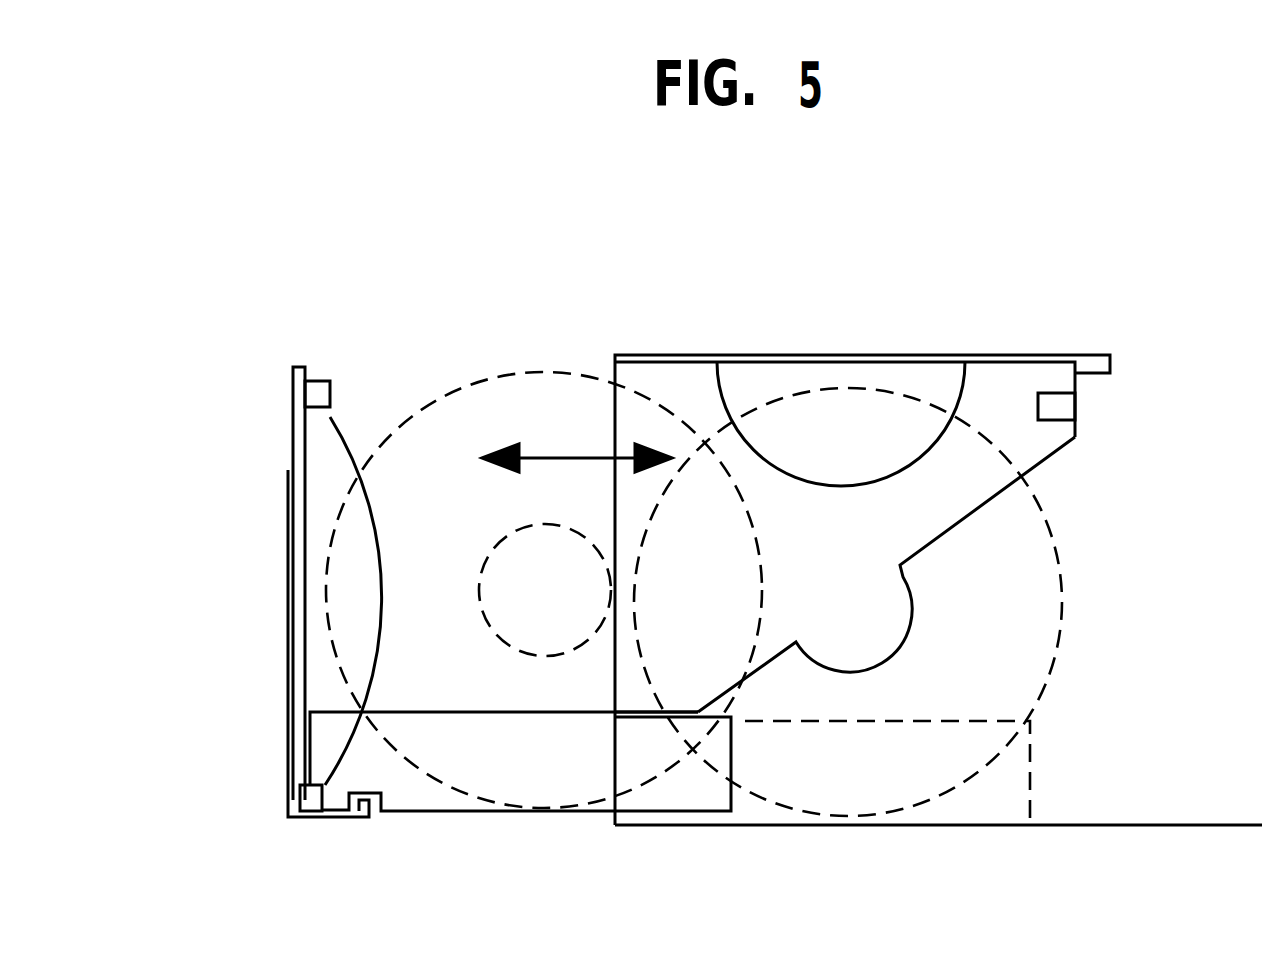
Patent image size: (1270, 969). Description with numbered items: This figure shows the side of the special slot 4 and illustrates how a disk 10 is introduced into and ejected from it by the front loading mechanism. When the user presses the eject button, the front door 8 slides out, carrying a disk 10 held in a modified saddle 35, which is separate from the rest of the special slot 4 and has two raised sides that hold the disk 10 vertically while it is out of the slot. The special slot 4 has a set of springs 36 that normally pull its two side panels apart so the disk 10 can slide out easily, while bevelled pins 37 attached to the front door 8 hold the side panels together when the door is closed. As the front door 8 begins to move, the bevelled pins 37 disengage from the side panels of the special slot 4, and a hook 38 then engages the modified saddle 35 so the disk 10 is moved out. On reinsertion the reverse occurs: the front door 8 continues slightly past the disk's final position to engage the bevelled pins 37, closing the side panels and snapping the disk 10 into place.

The special slot 4 is at (1038, 453).
The front door 8 is at (293, 417).
The disk 10 is at (805, 408).
The modified saddle 35 is at (332, 757).
The springs 36 is at (1057, 410).
The bevelled pins 37 is at (365, 601).
The hook 38 is at (352, 823).